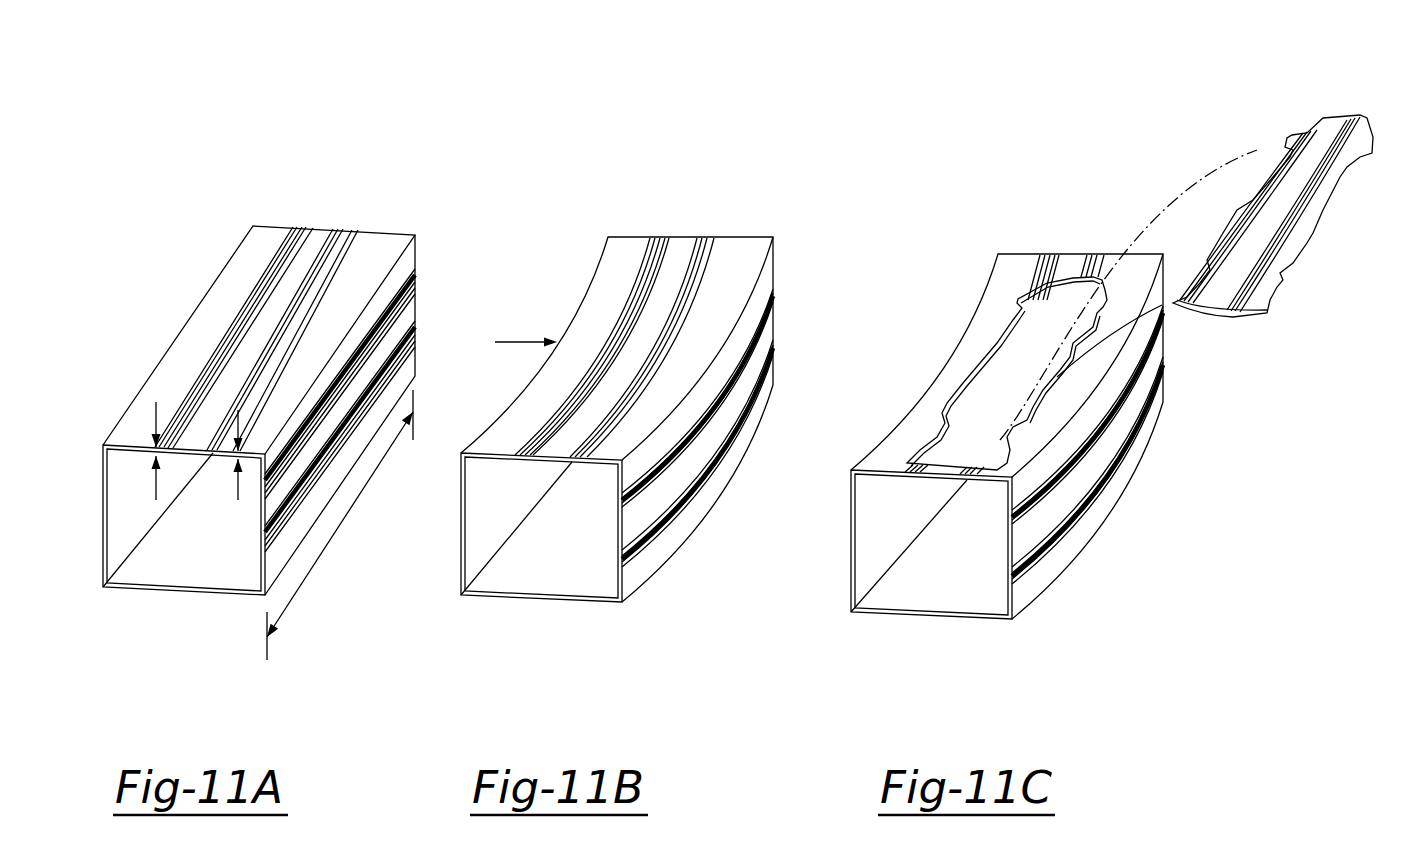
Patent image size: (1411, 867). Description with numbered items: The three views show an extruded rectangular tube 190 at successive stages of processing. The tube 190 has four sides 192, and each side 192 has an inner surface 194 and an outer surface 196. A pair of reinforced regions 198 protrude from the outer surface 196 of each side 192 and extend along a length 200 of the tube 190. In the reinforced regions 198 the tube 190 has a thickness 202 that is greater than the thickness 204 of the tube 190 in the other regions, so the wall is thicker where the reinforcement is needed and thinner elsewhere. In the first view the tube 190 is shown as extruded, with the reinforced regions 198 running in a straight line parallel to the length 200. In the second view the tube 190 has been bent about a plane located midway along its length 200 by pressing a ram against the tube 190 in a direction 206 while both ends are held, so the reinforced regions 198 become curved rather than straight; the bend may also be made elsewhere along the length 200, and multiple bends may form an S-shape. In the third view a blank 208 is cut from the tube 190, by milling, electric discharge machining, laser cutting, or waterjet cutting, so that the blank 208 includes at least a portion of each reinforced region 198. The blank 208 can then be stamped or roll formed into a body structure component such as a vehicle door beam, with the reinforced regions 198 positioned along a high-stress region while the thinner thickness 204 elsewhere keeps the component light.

In FIG. 11A, the rectangular tube 190 is at (397, 208).
In FIG. 11B, the rectangular tube 190 is at (738, 185).
In FIG. 11C, the rectangular tube 190 is at (1057, 220).
In FIG. 11A, the side 192 is at (226, 292).
In FIG. 11B, the side 192 is at (628, 258).
In FIG. 11C, the side 192 is at (1152, 413).
In FIG. 11A, the inner surface 194 is at (118, 492).
In FIG. 11B, the inner surface 194 is at (481, 504).
In FIG. 11C, the inner surface 194 is at (873, 529).
In FIG. 11A, the outer surface 196 is at (243, 268).
In FIG. 11B, the outer surface 196 is at (602, 293).
In FIG. 11C, the outer surface 196 is at (1000, 287).
In FIG. 11A, the reinforced region 198 is at (335, 250).
In FIG. 11B, the reinforced region 198 is at (706, 258).
In FIG. 11C, the reinforced region 198 is at (1344, 150).
In FIG. 11A, the length 200 is at (340, 525).
In FIG. 11A, the thickness 202 is at (165, 439).
In FIG. 11A, the thickness 204 is at (238, 470).
In FIG. 11B, the direction 206 is at (503, 341).
In FIG. 11C, the blank 208 is at (1330, 240).